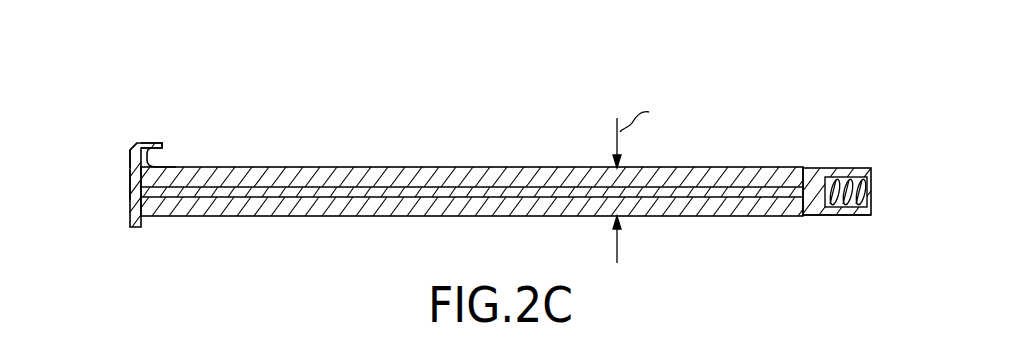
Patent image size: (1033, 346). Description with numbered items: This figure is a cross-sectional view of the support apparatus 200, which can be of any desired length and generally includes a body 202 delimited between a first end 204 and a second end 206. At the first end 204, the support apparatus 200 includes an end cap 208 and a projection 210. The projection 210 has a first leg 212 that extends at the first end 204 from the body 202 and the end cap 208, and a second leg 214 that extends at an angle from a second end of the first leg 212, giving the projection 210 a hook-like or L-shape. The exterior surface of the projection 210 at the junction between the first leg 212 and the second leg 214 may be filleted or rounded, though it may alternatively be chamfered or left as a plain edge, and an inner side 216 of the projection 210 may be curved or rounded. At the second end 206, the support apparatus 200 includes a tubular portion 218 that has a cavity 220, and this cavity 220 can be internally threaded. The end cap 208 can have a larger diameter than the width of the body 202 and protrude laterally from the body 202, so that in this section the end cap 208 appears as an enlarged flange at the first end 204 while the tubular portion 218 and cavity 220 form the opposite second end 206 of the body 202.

The support apparatus 200 is at (743, 150).
The body 202 is at (476, 168).
The first end 204 is at (130, 210).
The second end 206 is at (872, 169).
The end cap 208 is at (130, 183).
The projection 210 is at (130, 141).
The first leg 212 is at (130, 150).
The second leg 214 is at (158, 141).
The inner side 216 is at (163, 156).
The tubular portion 218 is at (835, 215).
The cavity 220 is at (847, 192).